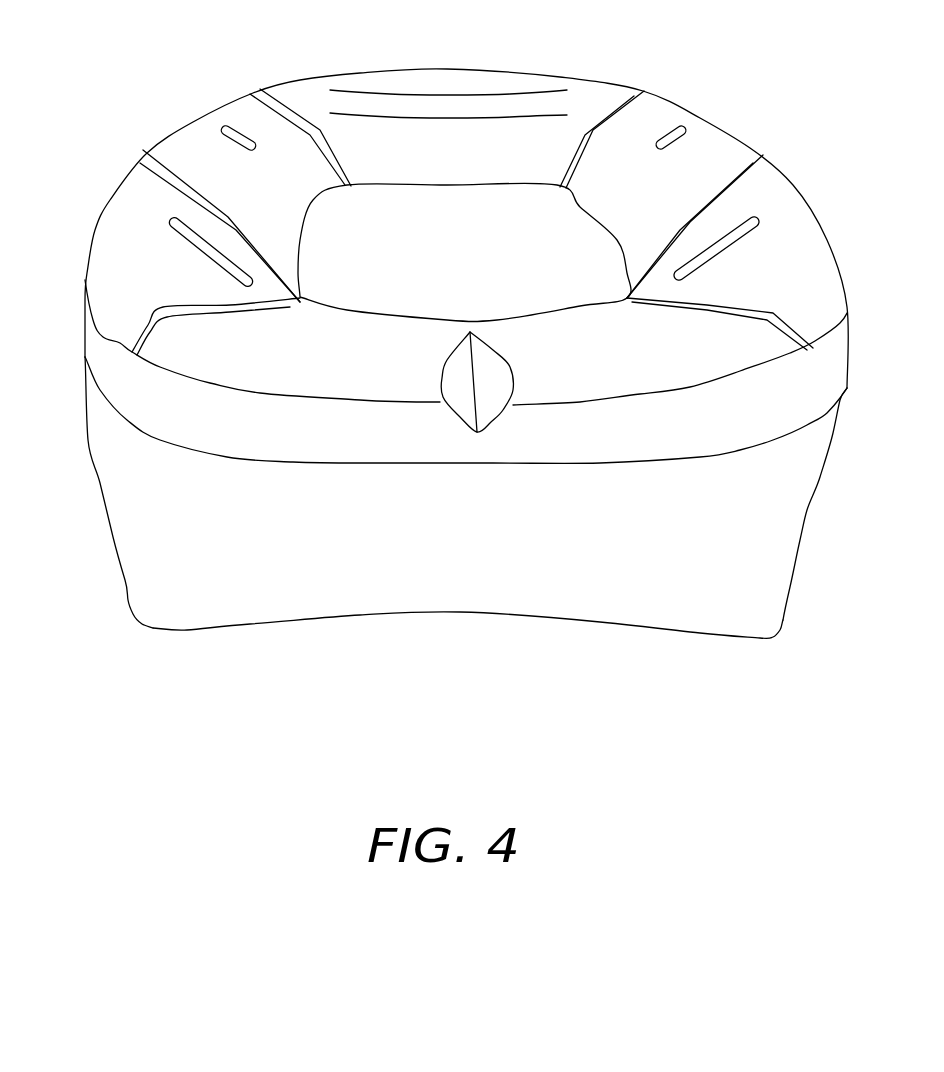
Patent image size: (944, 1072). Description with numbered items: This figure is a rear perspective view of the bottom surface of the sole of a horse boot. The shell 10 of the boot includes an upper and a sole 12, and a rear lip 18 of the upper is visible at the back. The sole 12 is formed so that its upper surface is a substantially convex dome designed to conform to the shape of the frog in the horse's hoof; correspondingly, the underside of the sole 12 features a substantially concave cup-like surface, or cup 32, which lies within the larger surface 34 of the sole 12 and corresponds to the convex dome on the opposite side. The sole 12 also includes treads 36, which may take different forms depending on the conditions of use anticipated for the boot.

The shell 10 is at (167, 637).
The sole 12 is at (605, 452).
The rear lip 18 is at (635, 622).
The cup 32 is at (507, 238).
The larger surface of the sole 34 is at (132, 247).
The treads 36 is at (143, 152).